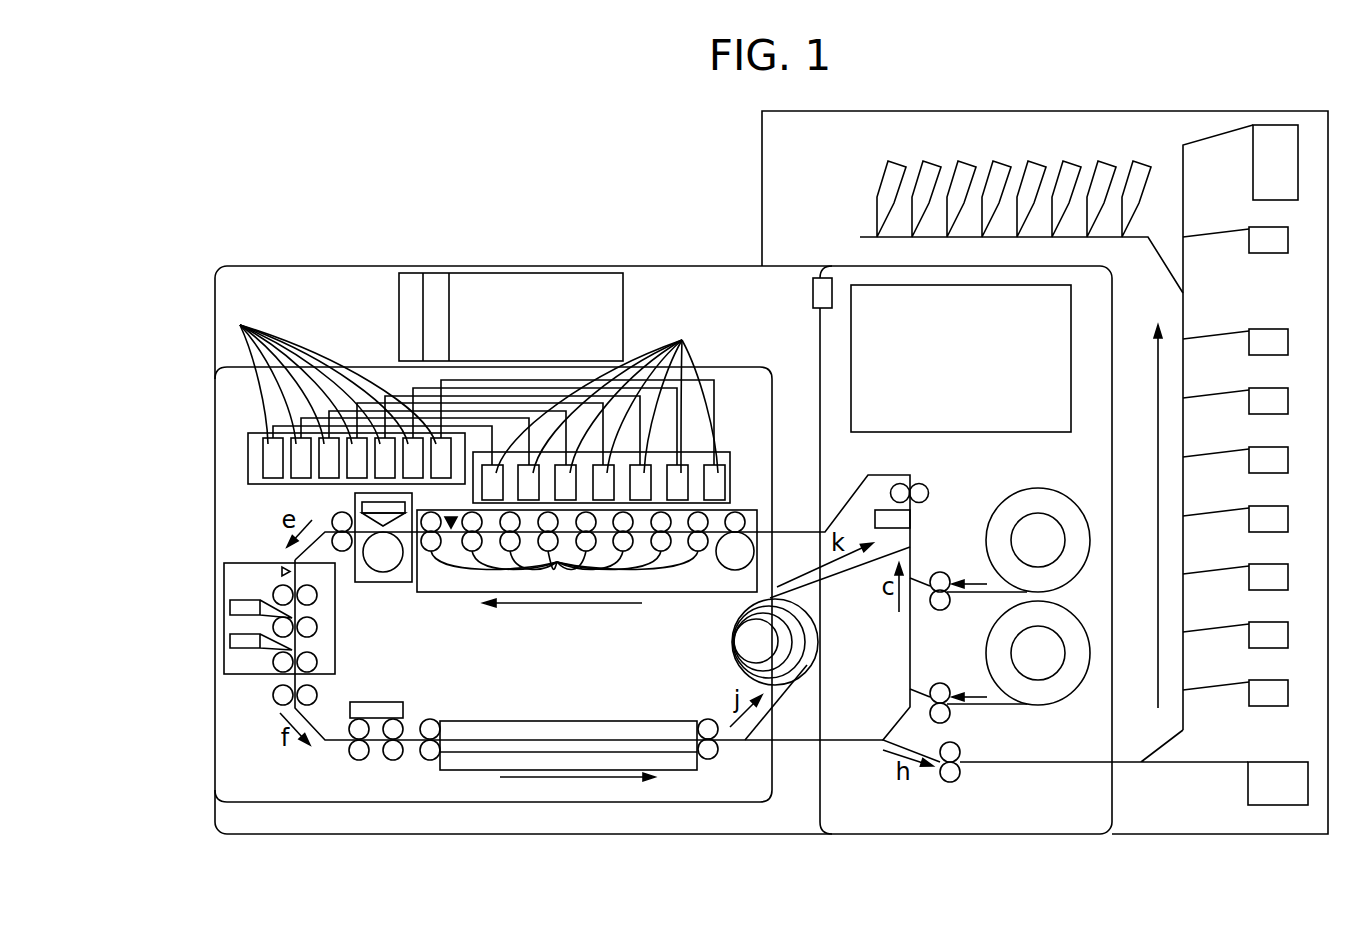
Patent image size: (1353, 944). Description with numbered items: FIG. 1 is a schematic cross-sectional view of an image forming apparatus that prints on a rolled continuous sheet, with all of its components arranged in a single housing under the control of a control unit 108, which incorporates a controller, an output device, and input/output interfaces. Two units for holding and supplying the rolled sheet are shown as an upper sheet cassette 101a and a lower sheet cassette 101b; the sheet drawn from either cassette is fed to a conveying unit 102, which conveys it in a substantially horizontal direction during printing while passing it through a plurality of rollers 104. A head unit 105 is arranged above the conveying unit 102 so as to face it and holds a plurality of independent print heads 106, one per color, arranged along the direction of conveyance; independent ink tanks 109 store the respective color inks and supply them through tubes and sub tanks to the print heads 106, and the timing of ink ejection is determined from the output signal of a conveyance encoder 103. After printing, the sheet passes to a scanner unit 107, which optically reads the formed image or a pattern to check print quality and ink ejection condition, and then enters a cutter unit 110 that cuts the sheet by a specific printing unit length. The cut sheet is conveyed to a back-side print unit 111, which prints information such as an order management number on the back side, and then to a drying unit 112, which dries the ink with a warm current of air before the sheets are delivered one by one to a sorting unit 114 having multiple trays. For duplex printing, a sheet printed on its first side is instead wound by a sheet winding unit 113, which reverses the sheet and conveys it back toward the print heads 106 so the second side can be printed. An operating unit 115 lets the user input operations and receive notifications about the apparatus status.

The upper sheet cassette 101a is at (986, 541).
The lower sheet cassette 101b is at (986, 655).
The conveying unit 102 is at (462, 593).
The conveyance encoder 103 is at (733, 558).
The rollers 104 is at (564, 572).
The head unit 105 is at (732, 462).
The print heads 106 is at (607, 392).
The scanner unit 107 is at (387, 585).
The control unit 108 is at (399, 316).
The ink tanks 109 is at (466, 389).
The cutter unit 110 is at (335, 637).
The back-side print unit 111 is at (403, 702).
The drying unit 112 is at (525, 720).
The sheet winding unit 113 is at (733, 643).
The sorting unit 114 is at (760, 178).
The operating unit 115 is at (1003, 432).